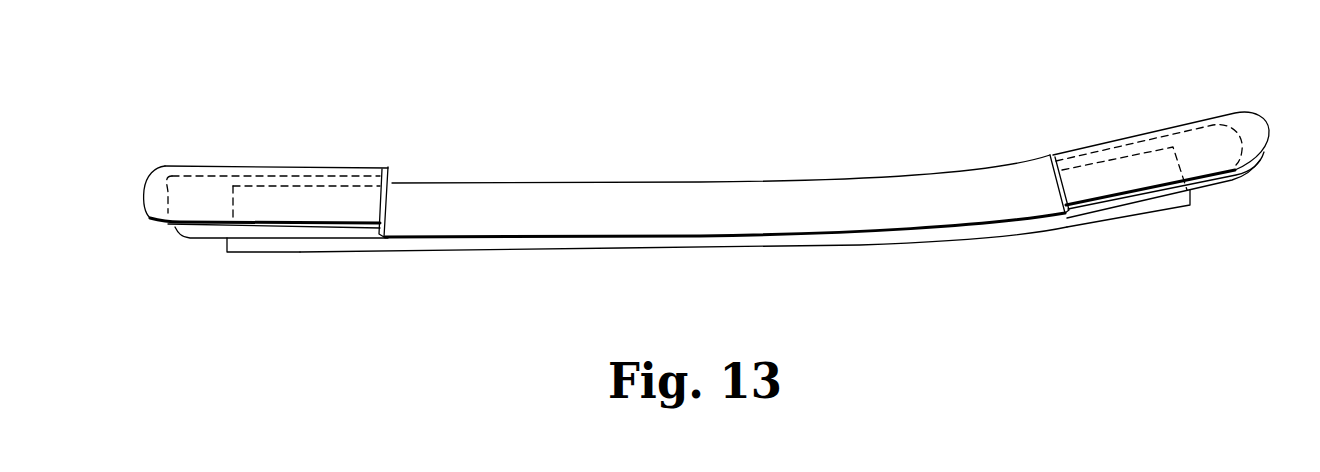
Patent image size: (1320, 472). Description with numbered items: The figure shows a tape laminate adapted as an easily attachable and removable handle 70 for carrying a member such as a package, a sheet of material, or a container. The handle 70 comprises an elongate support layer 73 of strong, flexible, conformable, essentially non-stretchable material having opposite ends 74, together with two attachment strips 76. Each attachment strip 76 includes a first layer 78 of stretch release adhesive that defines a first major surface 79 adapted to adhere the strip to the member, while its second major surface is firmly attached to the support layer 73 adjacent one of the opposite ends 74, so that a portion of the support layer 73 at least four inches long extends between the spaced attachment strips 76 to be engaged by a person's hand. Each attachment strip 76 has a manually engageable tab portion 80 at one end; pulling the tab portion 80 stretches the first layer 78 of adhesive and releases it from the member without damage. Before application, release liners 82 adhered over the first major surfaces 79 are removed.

The handle 70 is at (688, 194).
The elongate support layer 73 is at (647, 217).
The opposite ends 74 is at (226, 246).
The attachment strips 76 is at (253, 238).
The first layer of stretch release adhesive 78 is at (290, 236).
The first major surface 79 is at (330, 228).
The tab portion 80 is at (183, 238).
The release liners 82 is at (163, 177).